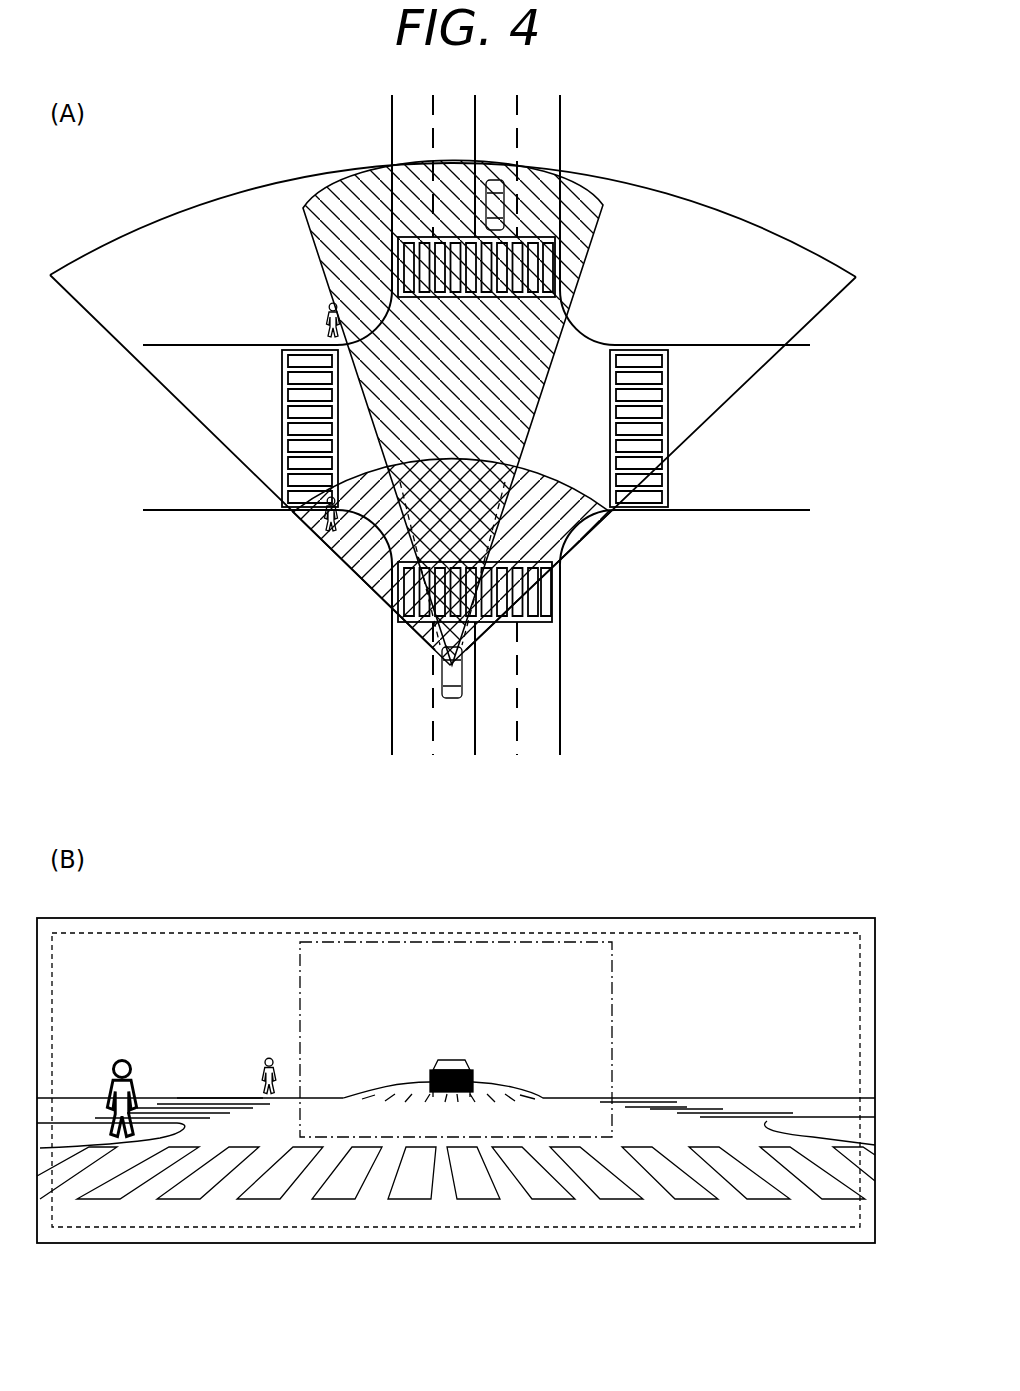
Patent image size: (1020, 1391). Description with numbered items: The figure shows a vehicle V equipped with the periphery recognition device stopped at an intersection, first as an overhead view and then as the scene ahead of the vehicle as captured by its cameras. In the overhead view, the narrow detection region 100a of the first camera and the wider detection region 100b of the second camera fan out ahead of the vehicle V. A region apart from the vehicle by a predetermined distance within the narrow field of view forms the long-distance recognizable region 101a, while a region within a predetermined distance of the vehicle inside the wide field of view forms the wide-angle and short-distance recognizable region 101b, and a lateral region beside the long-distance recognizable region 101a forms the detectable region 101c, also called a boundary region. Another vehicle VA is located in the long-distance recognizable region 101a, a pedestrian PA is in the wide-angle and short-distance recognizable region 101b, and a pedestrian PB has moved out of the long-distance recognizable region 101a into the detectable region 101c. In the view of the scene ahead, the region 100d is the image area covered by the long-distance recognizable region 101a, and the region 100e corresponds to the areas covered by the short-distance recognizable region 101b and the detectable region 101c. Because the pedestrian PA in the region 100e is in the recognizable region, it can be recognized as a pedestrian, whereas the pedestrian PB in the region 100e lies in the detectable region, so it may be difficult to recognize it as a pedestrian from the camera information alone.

The detection region 100a is at (593, 178).
The detection region 100b is at (787, 235).
The long-distance recognizable region 101a is at (585, 237).
The wide-angle and short-distance recognizable region 101b is at (555, 510).
The detectable region 101c is at (190, 375).
The region 100d is at (613, 975).
The region 100e is at (187, 1228).
The vehicle VA is at (507, 197).
The vehicle V is at (442, 680).
The pedestrian PA is at (325, 522).
The pedestrian PB is at (333, 318).